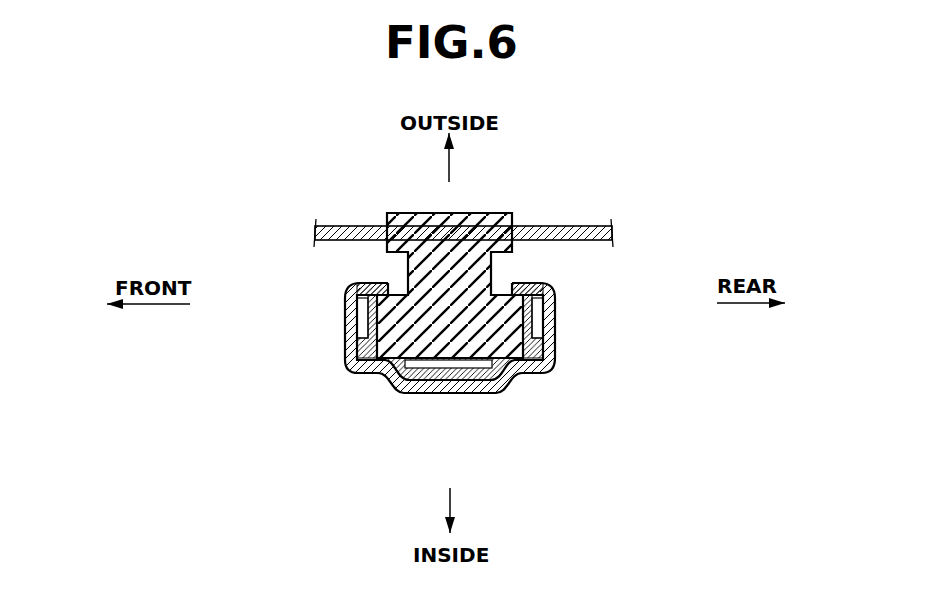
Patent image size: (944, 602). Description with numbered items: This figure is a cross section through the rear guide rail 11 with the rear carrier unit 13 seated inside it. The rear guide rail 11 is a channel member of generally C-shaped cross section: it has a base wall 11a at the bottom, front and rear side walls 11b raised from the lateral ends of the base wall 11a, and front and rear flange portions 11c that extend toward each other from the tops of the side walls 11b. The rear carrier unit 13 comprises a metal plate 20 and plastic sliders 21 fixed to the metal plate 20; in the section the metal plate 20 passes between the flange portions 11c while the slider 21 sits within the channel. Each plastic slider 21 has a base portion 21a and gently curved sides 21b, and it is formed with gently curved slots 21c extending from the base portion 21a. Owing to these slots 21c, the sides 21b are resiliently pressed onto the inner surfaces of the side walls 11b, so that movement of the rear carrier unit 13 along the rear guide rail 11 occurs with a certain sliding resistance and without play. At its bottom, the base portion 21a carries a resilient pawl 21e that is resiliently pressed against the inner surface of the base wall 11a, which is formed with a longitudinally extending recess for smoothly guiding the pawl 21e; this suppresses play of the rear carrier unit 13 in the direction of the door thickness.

The rear guide rail 11 is at (447, 366).
The base wall 11a is at (480, 393).
The front and rear side walls 11b is at (346, 328).
The front and rear flange portions 11c is at (375, 283).
The rear carrier unit 13 is at (557, 226).
The metal plate 20 is at (345, 226).
The plastic slider 21 is at (437, 375).
The base portion 21a is at (418, 383).
The sides of the plastic slider 21b is at (347, 347).
The gently curved slots 21c is at (352, 298).
The resilient pawl 21e is at (447, 372).